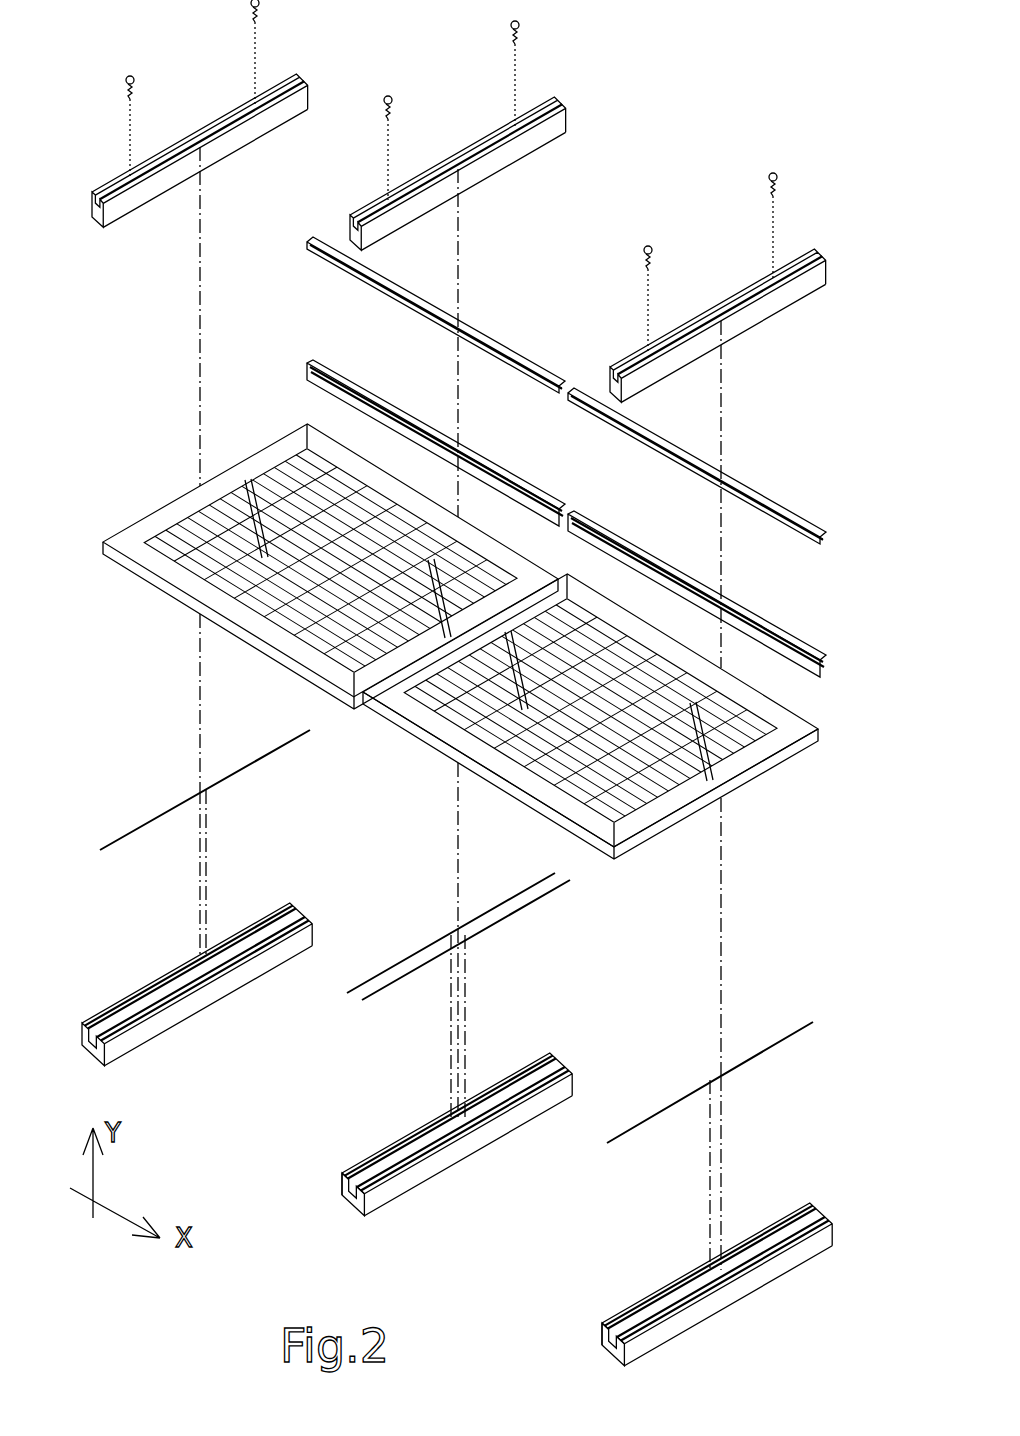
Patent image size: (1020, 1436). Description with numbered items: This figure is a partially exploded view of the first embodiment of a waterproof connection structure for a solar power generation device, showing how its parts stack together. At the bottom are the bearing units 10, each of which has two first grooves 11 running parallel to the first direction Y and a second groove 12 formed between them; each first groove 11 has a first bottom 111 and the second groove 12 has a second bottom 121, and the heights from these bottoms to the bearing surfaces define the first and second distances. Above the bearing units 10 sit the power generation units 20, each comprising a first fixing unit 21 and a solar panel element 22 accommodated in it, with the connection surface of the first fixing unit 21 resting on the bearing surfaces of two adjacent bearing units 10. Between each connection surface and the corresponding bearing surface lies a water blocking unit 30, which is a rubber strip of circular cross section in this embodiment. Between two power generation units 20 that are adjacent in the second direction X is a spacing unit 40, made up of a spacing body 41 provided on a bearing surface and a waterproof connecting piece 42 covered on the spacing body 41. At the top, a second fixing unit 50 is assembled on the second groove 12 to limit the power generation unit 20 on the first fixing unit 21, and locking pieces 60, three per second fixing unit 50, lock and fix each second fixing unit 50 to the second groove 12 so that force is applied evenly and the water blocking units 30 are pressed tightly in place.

The bearing unit 10 is at (457, 1134).
The first groove 11 is at (346, 1173).
The second groove 12 is at (359, 1186).
The first bottom 111 is at (603, 1326).
The second bottom 121 is at (618, 1336).
The power generation unit 20 is at (477, 669).
The first fixing unit 21 is at (638, 812).
The solar panel element 22 is at (602, 800).
The water blocking unit 30 is at (787, 1043).
The spacing unit 40 is at (508, 457).
The spacing body 41 is at (320, 363).
The waterproof connecting piece 42 is at (335, 260).
The second fixing unit 50 is at (310, 82).
The locking piece 60 is at (787, 167).